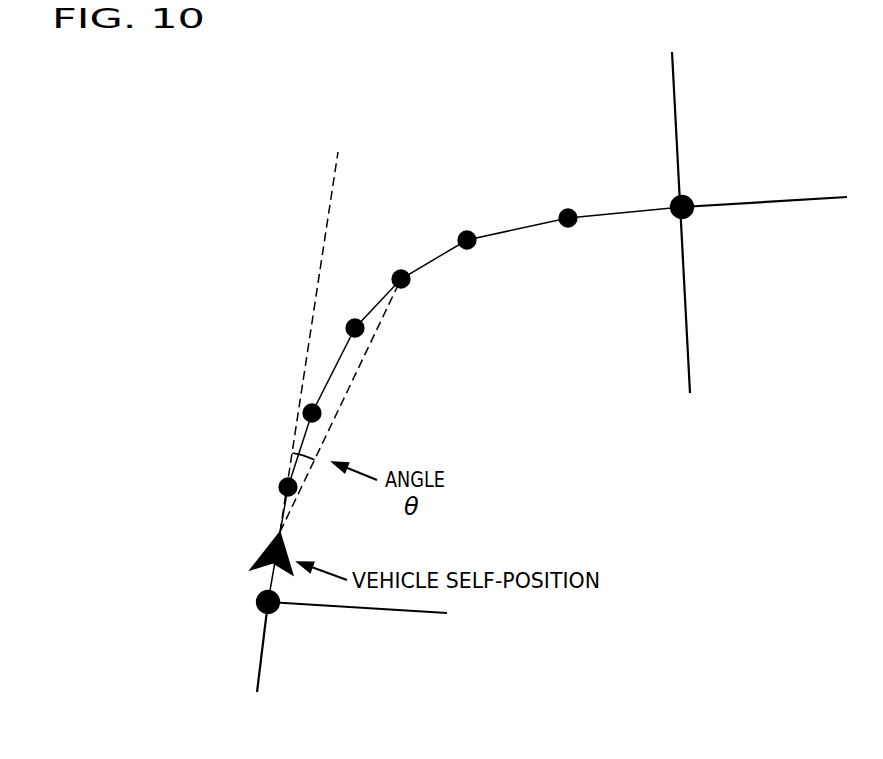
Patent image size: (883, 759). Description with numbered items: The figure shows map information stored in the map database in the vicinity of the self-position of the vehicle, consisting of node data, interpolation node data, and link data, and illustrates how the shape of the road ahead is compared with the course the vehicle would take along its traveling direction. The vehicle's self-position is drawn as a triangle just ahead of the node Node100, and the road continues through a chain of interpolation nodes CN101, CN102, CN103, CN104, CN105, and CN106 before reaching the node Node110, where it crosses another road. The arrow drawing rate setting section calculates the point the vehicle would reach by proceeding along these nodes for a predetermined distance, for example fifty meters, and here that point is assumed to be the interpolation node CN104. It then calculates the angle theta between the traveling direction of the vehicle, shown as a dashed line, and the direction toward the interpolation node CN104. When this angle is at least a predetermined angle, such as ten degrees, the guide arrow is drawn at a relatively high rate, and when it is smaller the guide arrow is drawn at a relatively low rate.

The node Node100 is at (218, 605).
The node Node110 is at (732, 171).
The interpolation node CN101 is at (180, 487).
The interpolation node CN102 is at (201, 403).
The interpolation node CN103 is at (333, 318).
The interpolation node CN104 is at (507, 311).
The interpolation node CN105 is at (427, 199).
The interpolation node CN106 is at (597, 177).